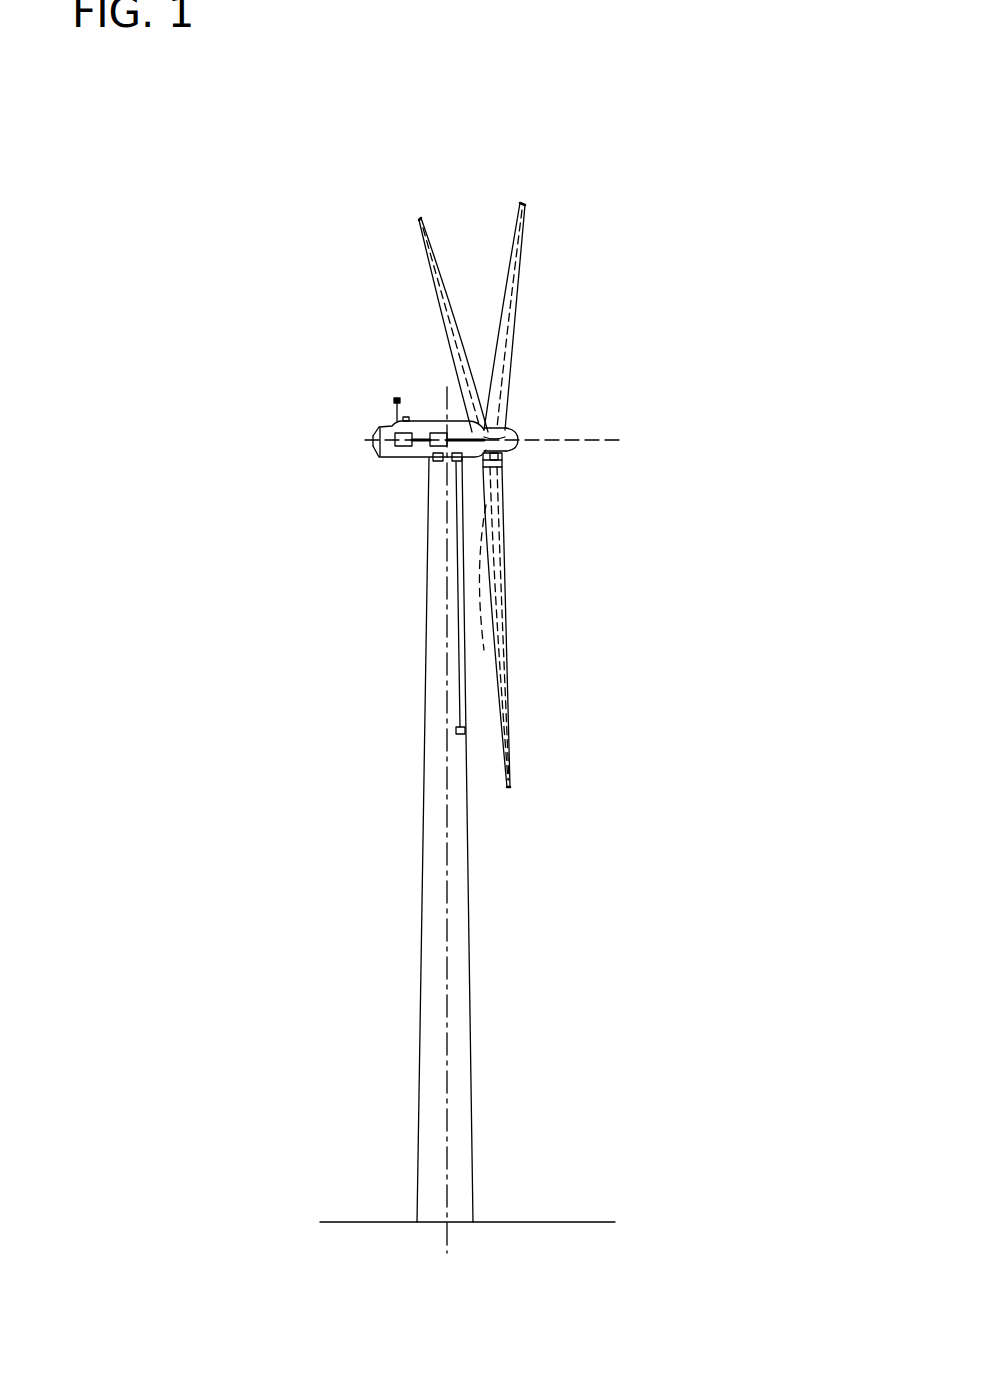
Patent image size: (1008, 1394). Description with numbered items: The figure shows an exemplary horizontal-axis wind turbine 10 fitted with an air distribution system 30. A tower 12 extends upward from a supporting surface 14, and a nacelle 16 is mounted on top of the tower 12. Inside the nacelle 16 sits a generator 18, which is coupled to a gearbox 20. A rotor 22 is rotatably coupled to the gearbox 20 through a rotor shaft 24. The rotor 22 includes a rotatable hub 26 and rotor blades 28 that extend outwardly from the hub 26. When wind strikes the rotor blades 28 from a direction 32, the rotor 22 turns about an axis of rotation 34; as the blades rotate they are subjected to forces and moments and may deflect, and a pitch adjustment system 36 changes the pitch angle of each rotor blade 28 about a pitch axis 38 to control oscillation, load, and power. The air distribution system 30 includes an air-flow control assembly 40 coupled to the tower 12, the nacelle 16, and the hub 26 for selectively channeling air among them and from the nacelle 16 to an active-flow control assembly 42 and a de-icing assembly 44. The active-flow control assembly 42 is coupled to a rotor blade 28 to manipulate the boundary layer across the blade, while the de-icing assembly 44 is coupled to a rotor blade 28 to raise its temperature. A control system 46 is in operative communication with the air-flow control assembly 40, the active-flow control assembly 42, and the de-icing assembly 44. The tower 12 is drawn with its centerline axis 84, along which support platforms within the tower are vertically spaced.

The wind turbine 10 is at (209, 230).
The tower 12 is at (421, 995).
The supporting surface 14 is at (376, 1222).
The nacelle 16 is at (427, 419).
The generator 18 is at (397, 423).
The gearbox 20 is at (428, 456).
The rotor 22 is at (528, 391).
The rotor shaft 24 is at (482, 400).
The rotatable hub 26 is at (515, 433).
The rotor blade 28 is at (440, 289).
The air distribution system 30 is at (416, 678).
The direction 32 is at (746, 439).
The axis of rotation 34 is at (583, 440).
The pitch adjustment system 36 is at (505, 458).
The pitch axis 38 is at (455, 318).
The air-flow control assembly 40 is at (503, 452).
The active-flow control assembly 42 is at (476, 594).
The de-icing assembly 44 is at (503, 527).
The control system 46 is at (430, 462).
The centerline axis 84 is at (448, 935).